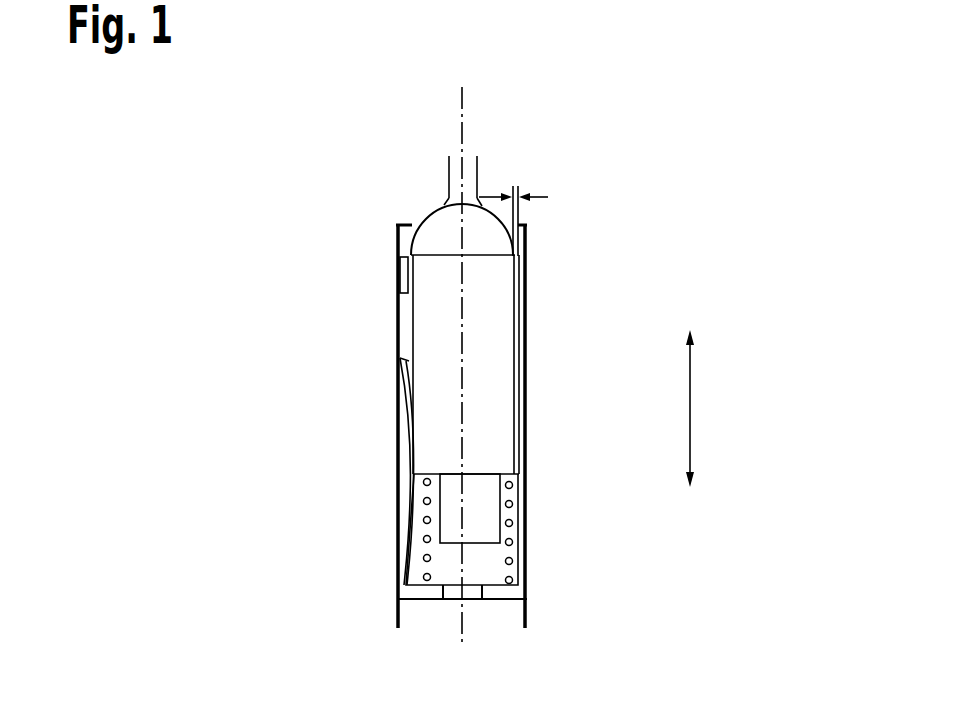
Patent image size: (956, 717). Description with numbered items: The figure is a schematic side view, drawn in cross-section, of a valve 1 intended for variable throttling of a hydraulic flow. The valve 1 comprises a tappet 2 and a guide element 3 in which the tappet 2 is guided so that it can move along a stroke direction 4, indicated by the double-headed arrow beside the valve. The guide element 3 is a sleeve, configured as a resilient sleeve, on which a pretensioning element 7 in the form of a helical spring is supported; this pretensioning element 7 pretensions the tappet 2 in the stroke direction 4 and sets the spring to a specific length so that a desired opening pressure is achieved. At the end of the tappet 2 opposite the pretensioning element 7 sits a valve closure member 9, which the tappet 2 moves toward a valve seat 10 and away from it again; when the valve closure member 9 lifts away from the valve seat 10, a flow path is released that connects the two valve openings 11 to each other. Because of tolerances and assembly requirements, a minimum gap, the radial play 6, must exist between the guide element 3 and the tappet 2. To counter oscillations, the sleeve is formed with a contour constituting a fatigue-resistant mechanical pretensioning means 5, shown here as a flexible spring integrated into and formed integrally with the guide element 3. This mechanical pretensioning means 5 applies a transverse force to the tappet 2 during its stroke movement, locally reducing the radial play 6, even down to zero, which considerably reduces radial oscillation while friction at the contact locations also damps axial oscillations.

The valve 1 is at (727, 119).
The tappet 2 is at (513, 445).
The guide element 3 is at (520, 278).
The stroke direction 4 is at (691, 408).
The mechanical pretensioning means 5 is at (407, 428).
The radial play 6 is at (548, 197).
The pretensioning element 7 is at (511, 565).
The valve closure member 9 is at (430, 238).
The valve seat 10 is at (458, 196).
The valve openings 11 is at (401, 322).